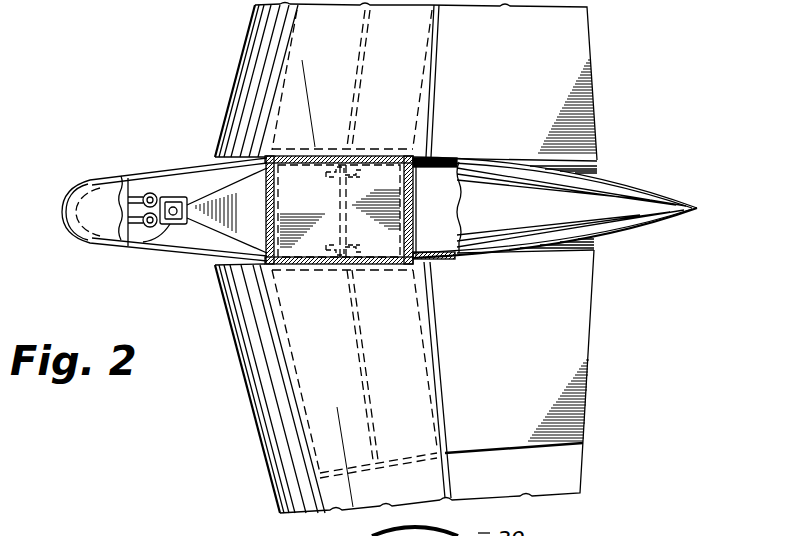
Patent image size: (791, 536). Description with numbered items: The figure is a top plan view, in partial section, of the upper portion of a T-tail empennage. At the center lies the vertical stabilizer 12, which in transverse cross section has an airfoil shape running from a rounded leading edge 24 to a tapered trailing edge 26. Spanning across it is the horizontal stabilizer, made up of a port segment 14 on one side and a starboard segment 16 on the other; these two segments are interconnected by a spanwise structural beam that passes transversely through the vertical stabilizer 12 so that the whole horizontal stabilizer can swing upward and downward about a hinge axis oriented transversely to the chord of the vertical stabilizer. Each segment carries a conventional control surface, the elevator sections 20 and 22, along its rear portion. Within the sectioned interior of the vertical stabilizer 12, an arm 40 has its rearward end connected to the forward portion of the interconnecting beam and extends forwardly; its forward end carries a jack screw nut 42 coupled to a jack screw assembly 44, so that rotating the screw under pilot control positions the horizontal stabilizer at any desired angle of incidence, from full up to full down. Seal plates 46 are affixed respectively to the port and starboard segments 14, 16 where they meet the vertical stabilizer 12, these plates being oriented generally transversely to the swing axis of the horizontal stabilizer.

The vertical stabilizer 12 is at (640, 181).
The port segment 14 is at (258, 400).
The starboard segment 16 is at (258, 52).
The elevator section 20 is at (570, 348).
The elevator section 22 is at (570, 85).
The leading edge 24 is at (60, 208).
The trailing edge 26 is at (698, 208).
The arm 40 is at (200, 253).
The jack screw nut 42 is at (137, 250).
The jack screw assembly 44 is at (436, 157).
The seal plates 46 is at (376, 154).